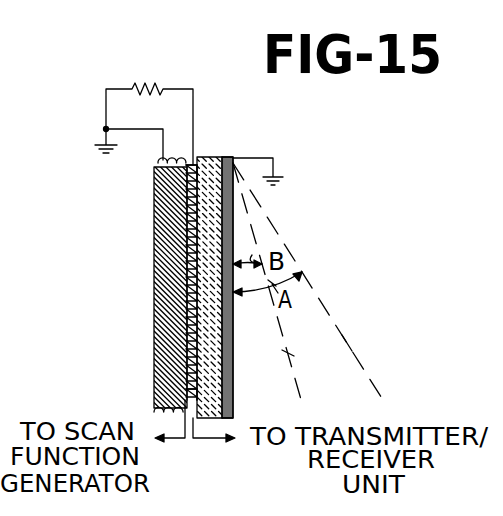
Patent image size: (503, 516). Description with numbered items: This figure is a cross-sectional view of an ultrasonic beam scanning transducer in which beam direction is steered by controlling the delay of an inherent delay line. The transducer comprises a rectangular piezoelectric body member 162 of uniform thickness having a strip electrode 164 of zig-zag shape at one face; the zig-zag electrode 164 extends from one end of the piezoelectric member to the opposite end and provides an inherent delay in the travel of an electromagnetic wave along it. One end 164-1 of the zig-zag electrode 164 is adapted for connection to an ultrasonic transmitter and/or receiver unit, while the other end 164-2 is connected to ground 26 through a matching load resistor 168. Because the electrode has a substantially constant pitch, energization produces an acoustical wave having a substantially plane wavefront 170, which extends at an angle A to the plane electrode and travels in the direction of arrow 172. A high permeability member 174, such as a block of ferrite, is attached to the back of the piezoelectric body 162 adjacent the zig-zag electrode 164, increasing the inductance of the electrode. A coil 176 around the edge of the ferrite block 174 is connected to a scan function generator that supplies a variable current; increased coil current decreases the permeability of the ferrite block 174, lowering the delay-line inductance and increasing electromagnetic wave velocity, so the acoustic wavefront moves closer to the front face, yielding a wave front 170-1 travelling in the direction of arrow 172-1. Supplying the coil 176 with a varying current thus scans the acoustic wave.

The ground 26 is at (100, 147).
The piezoelectric body member 162 is at (212, 158).
The zig-zag electrode 164 is at (188, 228).
The end of zig-zag electrode 164-1 is at (160, 393).
The other end of zig-zag electrode 164-2 is at (190, 178).
The matching load resistor 168 is at (143, 78).
The plane wavefront 170 is at (349, 340).
The acoustic wave front 170-1 is at (302, 405).
The arrow 172 is at (344, 290).
The arrow 172-1 is at (311, 345).
The high permeability member 174 is at (154, 278).
The coil 176 is at (158, 160).